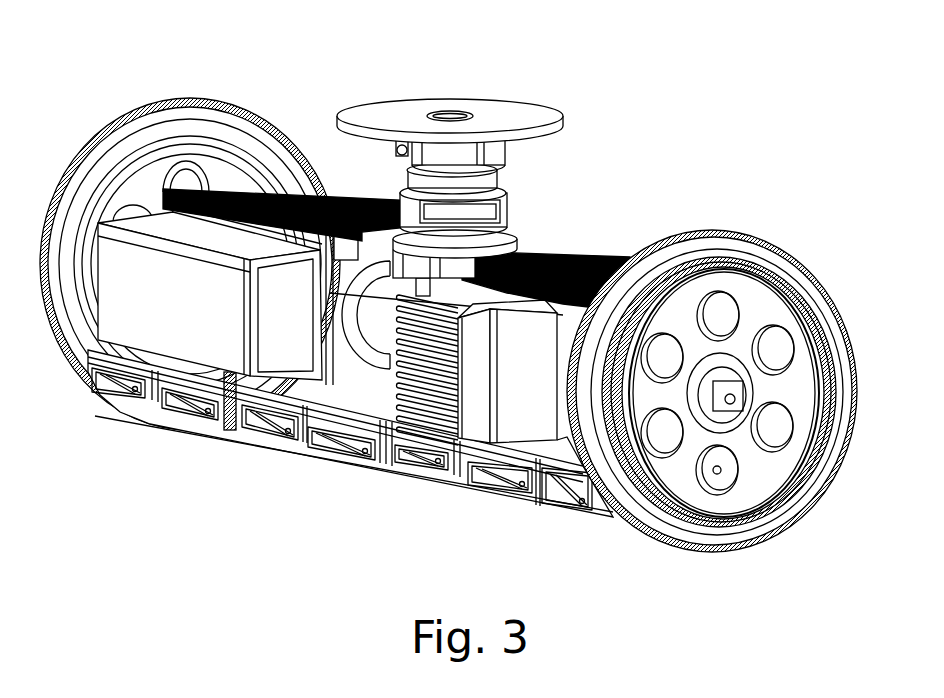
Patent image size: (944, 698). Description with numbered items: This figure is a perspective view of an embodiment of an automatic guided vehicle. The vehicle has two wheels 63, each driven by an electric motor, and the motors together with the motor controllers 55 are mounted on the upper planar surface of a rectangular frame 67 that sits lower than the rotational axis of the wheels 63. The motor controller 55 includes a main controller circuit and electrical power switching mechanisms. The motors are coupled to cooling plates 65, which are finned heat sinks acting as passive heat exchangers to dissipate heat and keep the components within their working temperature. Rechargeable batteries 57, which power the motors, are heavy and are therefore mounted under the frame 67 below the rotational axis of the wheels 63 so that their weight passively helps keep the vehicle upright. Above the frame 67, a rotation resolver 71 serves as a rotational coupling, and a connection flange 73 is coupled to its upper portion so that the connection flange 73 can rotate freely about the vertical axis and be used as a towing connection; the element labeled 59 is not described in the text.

The motor controller 55 is at (480, 423).
The batteries 57 is at (210, 410).
The control housing 59 is at (165, 323).
The wheels 63 is at (815, 273).
The cooling plates 65 is at (337, 190).
The frame 67 is at (358, 403).
The rotation resolver 71 is at (520, 228).
The connection flange 73 is at (507, 113).